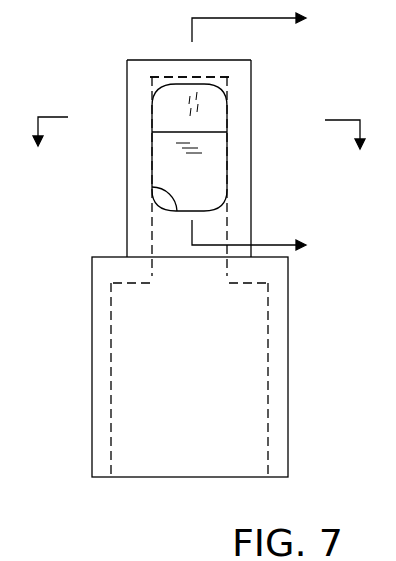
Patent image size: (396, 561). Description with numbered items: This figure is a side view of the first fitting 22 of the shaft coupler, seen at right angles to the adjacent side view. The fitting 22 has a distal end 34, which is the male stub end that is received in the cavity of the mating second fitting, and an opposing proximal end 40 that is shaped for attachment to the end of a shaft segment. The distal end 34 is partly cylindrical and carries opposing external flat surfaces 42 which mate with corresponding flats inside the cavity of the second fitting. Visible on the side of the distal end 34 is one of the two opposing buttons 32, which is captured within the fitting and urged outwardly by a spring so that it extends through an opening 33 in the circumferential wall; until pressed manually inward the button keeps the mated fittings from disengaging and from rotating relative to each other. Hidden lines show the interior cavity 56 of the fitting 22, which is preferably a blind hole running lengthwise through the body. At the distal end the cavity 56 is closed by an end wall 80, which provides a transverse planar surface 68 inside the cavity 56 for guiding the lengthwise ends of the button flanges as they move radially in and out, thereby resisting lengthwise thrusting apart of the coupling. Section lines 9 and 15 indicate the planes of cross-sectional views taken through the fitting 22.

The section line 9- 9 is at (260, 132).
The section line 15- 15 is at (193, 148).
The first fitting 22 is at (215, 269).
The button 32 is at (172, 162).
The opening 33 is at (152, 188).
The distal end 34 is at (195, 158).
The proximal end 40 is at (104, 303).
The flat surface 42 is at (127, 93).
The interior cavity 56 is at (222, 219).
The planar surface 68 is at (148, 78).
The end wall 80 is at (217, 72).